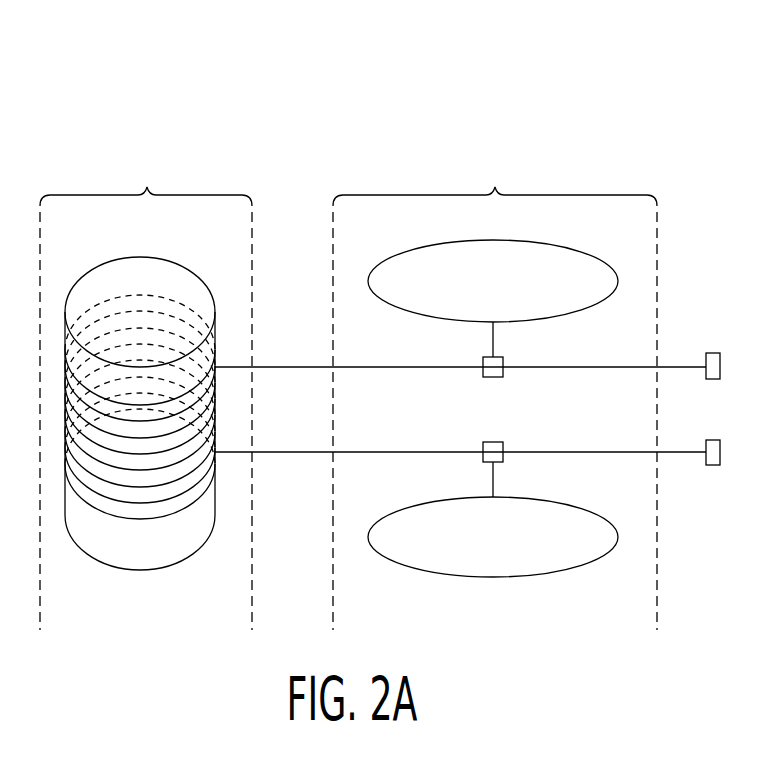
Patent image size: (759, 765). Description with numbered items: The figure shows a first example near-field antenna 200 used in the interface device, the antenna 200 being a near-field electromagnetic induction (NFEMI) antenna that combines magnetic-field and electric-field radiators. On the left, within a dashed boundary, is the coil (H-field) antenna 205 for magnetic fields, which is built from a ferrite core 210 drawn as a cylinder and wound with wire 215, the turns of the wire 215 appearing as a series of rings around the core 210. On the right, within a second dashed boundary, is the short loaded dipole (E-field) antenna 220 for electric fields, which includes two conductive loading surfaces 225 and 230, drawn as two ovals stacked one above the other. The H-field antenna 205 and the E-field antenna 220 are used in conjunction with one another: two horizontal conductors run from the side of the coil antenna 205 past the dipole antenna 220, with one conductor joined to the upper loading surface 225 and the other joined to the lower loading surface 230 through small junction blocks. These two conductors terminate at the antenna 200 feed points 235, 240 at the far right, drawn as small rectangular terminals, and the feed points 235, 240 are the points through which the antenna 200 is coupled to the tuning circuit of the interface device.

The near-field antenna 200 is at (117, 104).
The coil (H-field) antenna 205 is at (146, 389).
The ferrite core 210 is at (153, 257).
The wire 215 is at (113, 524).
The short loaded dipole (E-field) antenna 220 is at (495, 389).
The conductive loading surface 225 is at (516, 292).
The conductive loading surface 230 is at (516, 546).
The feed point 235 is at (713, 353).
The feed point 240 is at (713, 465).